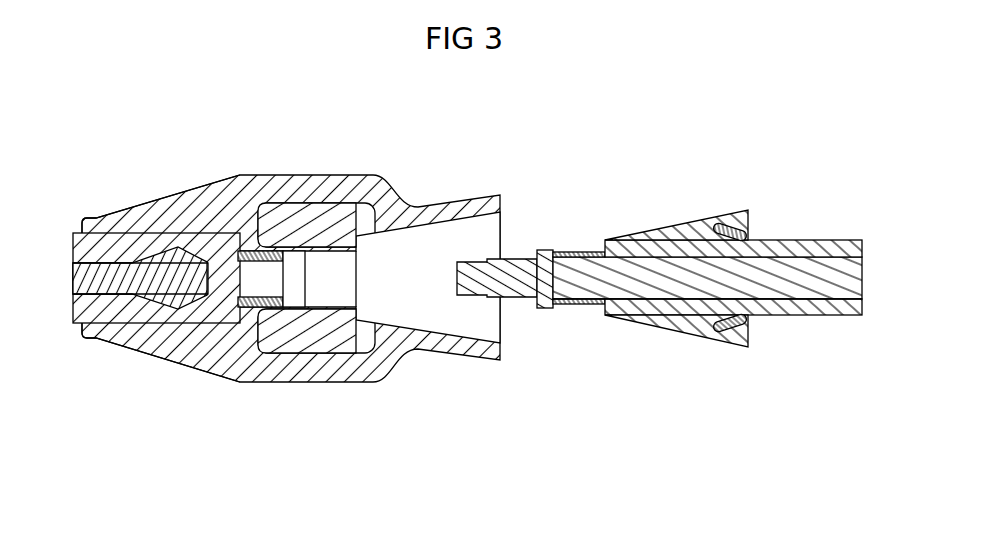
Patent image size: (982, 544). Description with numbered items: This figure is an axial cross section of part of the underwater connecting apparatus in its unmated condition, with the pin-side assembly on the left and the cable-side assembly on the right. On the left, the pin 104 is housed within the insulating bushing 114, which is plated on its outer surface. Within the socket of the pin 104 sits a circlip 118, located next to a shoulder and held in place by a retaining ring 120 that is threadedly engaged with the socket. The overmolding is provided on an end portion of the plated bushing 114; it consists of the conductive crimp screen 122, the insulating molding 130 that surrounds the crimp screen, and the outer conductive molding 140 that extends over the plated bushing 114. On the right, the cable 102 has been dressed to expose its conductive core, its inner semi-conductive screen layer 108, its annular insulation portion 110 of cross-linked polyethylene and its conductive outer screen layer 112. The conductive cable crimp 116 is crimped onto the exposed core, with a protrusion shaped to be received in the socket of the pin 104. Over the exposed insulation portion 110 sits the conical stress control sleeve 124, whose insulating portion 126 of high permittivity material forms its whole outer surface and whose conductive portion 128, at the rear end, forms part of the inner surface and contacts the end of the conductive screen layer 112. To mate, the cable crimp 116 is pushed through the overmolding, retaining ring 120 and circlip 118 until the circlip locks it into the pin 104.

The cable 102 is at (659, 283).
The pin 104 is at (125, 278).
The inner semi-conductive screen layer 108 is at (777, 300).
The insulation portion 110 is at (622, 250).
The conductive outer screen layer 112 is at (833, 316).
The insulating bushing 114 is at (103, 248).
The cable crimp 116 is at (510, 272).
The circlip 118 is at (240, 250).
The retaining ring 120 is at (282, 250).
The conductive crimp screen 122 is at (328, 222).
The stress control sleeve 124 is at (681, 302).
The insulating portion 126 is at (640, 318).
The conductive portion 128 is at (732, 238).
The insulating molding 130 is at (252, 370).
The outer conductive molding 140 is at (160, 348).